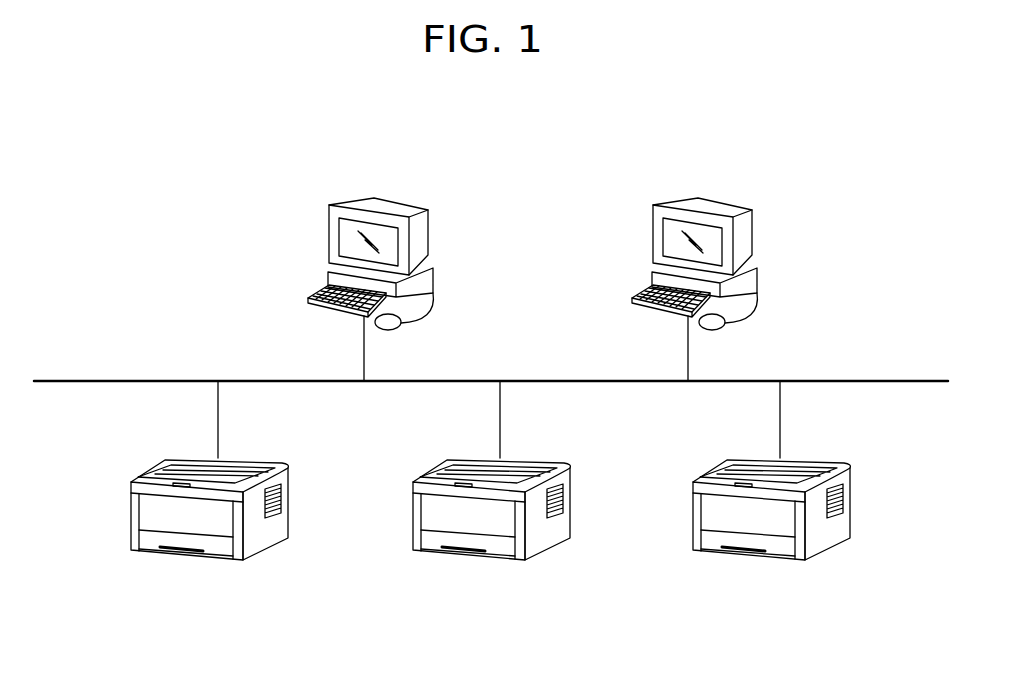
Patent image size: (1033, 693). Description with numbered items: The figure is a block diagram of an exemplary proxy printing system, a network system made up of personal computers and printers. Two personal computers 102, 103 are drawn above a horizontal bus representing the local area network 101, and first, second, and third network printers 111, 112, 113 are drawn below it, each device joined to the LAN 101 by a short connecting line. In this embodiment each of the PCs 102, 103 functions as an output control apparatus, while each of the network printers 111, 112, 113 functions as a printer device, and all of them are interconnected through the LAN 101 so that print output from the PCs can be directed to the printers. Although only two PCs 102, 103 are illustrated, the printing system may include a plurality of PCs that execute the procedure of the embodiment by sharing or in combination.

The local area network 101 is at (102, 381).
The personal computer 102 is at (407, 200).
The personal computer 103 is at (731, 200).
The first network printer 111 is at (153, 550).
The second network printer 112 is at (435, 550).
The third network printer 113 is at (715, 550).